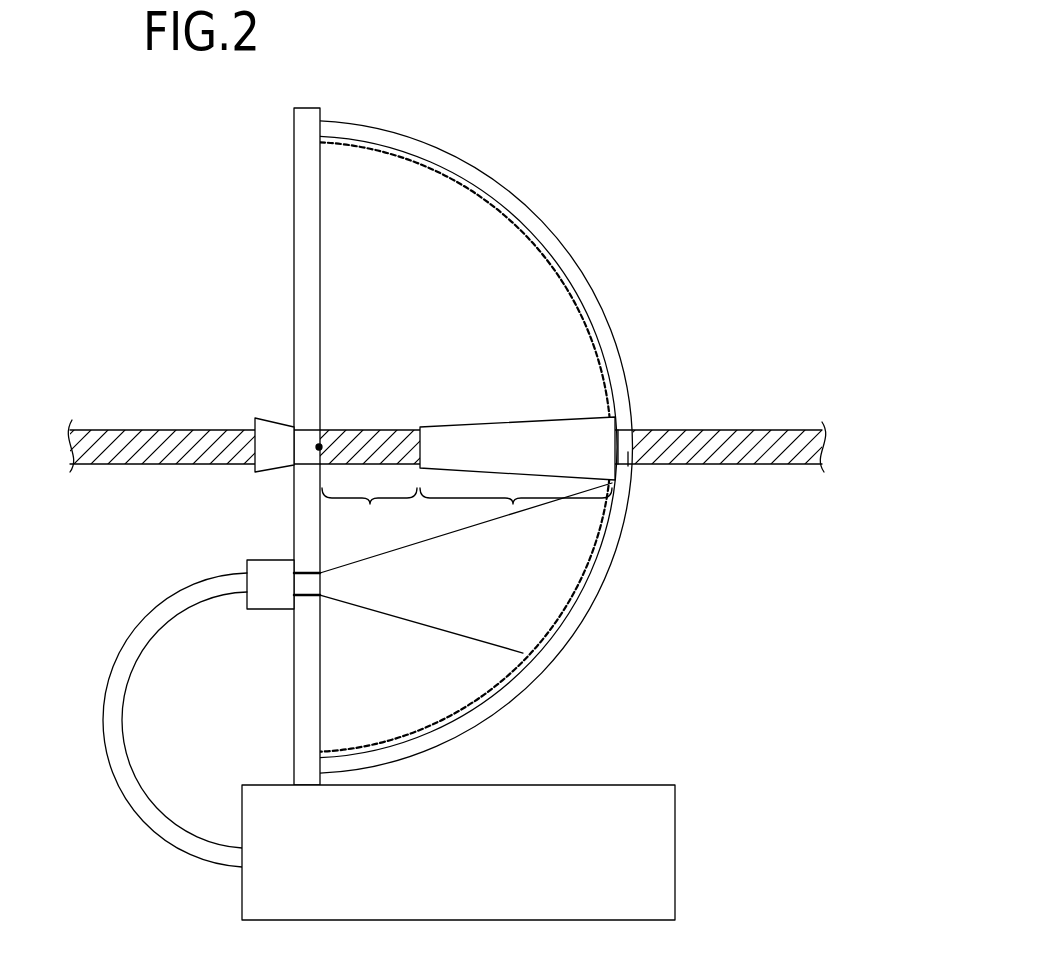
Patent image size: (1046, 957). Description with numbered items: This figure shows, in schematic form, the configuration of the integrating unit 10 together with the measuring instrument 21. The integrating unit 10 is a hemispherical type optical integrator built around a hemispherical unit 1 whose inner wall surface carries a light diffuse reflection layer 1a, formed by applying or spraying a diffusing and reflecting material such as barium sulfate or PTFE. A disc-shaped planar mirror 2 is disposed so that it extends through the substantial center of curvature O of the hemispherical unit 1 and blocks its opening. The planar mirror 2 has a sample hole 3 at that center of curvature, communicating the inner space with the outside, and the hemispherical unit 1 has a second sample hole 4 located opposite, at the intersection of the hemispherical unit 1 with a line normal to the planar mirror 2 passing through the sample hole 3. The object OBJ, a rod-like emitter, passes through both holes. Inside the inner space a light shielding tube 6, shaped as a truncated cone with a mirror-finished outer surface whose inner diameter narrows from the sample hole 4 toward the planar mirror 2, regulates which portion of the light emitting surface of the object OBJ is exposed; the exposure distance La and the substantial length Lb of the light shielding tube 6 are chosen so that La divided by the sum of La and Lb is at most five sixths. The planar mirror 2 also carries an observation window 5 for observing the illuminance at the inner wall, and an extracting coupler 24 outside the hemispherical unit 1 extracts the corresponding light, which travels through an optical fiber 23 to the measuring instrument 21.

The integrating unit 10 is at (444, 437).
The hemispherical unit 1 is at (606, 568).
The light diffuse reflection layer 1a is at (565, 622).
The planar mirror 2 is at (308, 322).
The sample hole 3 is at (307, 437).
The center of curvature O is at (321, 445).
The light shielding tube 6 is at (587, 432).
The object OBJ is at (760, 445).
The sample hole 4 is at (632, 477).
The exposure distance La is at (369, 518).
The substantial length of light shielding tube Lb is at (513, 504).
The extracting coupler 24 is at (270, 572).
The observation window 5 is at (307, 585).
The optical fiber 23 is at (125, 772).
The measuring instrument 21 is at (653, 858).